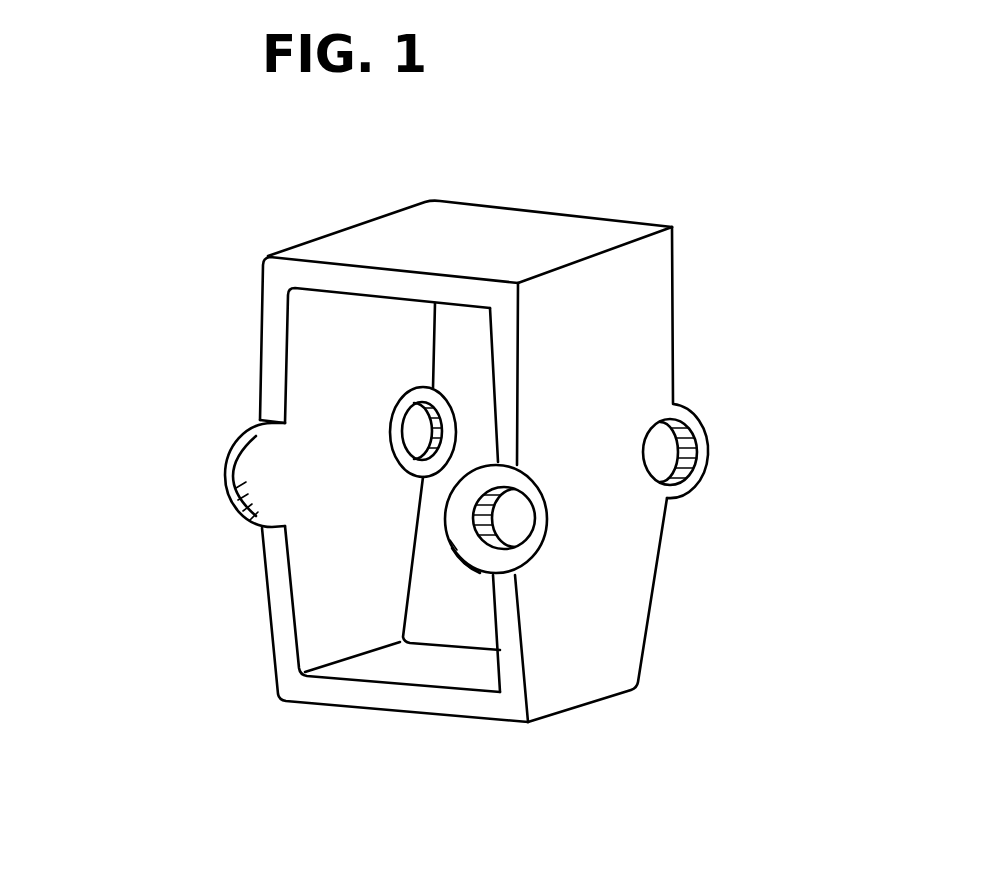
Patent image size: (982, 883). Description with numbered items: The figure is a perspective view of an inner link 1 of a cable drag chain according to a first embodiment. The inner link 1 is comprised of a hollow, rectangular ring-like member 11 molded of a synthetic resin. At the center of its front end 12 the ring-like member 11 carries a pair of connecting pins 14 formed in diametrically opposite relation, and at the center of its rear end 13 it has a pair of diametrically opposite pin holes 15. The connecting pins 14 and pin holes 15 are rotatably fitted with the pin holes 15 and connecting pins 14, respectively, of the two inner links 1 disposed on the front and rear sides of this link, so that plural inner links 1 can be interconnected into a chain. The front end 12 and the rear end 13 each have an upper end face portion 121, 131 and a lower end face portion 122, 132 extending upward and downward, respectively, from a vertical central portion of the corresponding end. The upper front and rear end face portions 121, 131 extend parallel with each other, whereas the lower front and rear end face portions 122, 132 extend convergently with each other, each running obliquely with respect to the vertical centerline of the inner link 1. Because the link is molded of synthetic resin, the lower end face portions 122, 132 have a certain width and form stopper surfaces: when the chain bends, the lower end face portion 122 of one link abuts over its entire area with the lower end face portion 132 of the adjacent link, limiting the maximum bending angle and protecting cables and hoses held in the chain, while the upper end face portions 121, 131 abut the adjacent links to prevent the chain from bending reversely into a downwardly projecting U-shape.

The inner link 1 is at (583, 208).
The ring-like member 11 is at (470, 461).
The front end 12 is at (426, 513).
The upper front end face portion 121 is at (272, 311).
The lower front end face portion 122 is at (282, 632).
The rear end 13 is at (708, 474).
The upper rear end face portion 131 is at (675, 307).
The lower rear end face portion 132 is at (655, 583).
The connecting pin 14 is at (520, 523).
The pin hole 15 is at (667, 452).